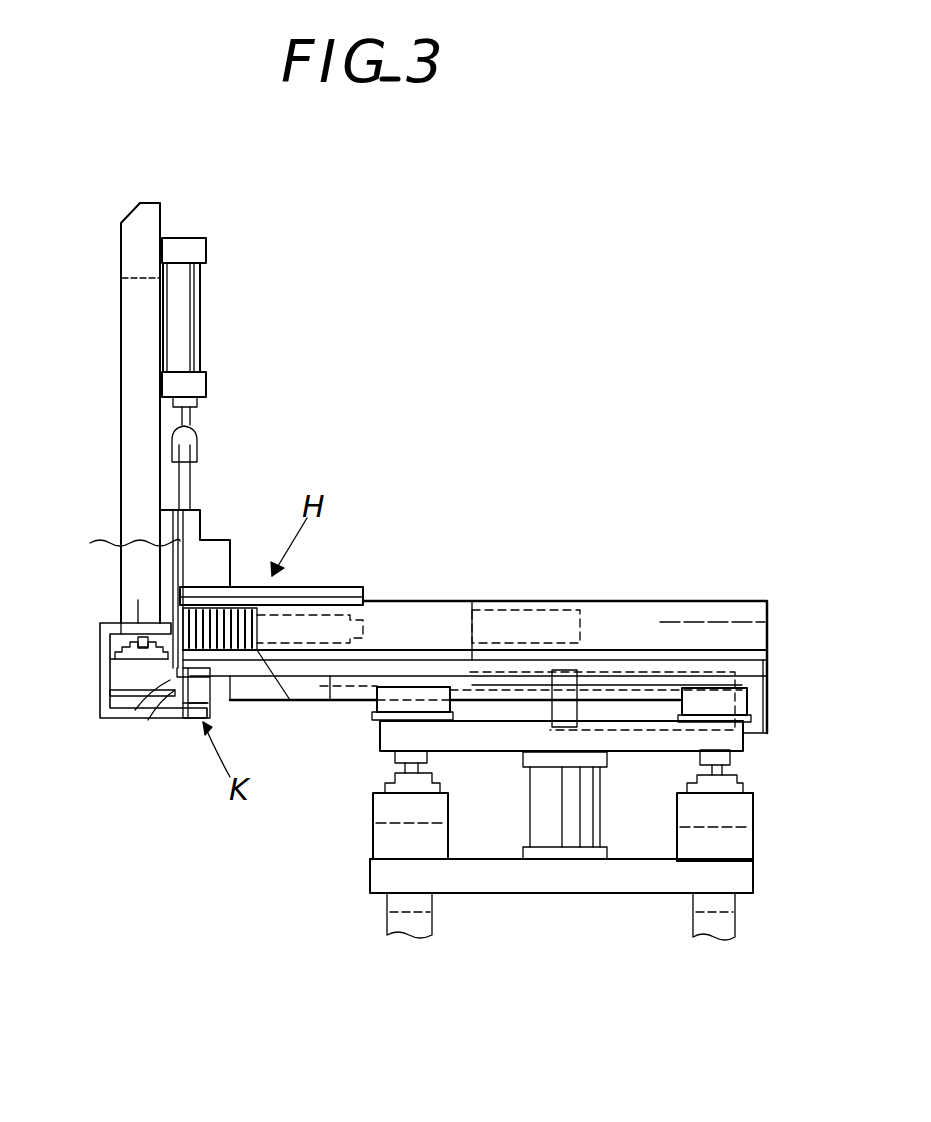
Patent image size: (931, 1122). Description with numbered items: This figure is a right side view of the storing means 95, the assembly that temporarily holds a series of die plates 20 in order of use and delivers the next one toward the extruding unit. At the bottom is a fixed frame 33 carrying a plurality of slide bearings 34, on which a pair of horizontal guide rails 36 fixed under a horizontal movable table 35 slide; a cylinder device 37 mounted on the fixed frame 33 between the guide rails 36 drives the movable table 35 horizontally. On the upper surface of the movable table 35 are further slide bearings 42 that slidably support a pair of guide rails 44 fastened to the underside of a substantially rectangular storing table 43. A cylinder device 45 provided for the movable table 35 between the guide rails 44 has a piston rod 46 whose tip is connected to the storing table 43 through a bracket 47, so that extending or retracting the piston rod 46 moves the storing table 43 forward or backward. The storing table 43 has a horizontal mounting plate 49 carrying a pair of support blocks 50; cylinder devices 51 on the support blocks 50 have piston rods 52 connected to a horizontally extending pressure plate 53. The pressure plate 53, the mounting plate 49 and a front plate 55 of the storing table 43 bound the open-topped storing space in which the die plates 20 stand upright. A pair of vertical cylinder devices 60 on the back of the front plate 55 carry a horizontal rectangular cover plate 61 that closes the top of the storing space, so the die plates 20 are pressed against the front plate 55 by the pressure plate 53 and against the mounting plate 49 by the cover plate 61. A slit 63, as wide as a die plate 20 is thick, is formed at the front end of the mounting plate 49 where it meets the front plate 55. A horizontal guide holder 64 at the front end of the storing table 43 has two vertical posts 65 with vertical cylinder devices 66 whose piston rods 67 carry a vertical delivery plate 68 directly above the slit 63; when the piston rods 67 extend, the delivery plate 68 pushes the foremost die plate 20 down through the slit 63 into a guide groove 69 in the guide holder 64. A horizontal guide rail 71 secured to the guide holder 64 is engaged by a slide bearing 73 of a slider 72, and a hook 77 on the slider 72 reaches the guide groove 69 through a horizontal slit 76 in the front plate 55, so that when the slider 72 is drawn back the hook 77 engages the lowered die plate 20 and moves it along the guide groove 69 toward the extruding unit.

The die plate 20 is at (230, 600).
The fixed frame 33 is at (417, 923).
The slide bearings 34 is at (385, 788).
The movable table 35 is at (737, 743).
The guide rails 36 is at (393, 757).
The cylinder device 37 is at (545, 808).
The slide bearings 42 is at (750, 700).
The storing table 43 is at (770, 612).
The guide rails 44 is at (253, 693).
The cylinder device 45 is at (643, 713).
The piston rod 46 is at (483, 705).
The bracket 47 is at (353, 670).
The mounting plate 49 is at (620, 660).
The support blocks 50 is at (483, 600).
The cylinder devices 51 is at (555, 610).
The piston rods 52 is at (337, 600).
The pressure plate 53 is at (262, 650).
The front plate 55 is at (178, 538).
The cylinder devices 60 is at (213, 548).
The cover plate 61 is at (300, 593).
The slit 63 is at (207, 683).
The guide holder 64 is at (117, 708).
The posts 65 is at (125, 321).
The cylinder devices 66 is at (190, 322).
The piston rods 67 is at (192, 414).
The delivery plate 68 is at (186, 476).
The guide groove 69 is at (177, 720).
The guide rail 71 is at (143, 637).
The slider 72 is at (117, 670).
The slide bearing 73 is at (113, 643).
The slit 76 is at (167, 677).
The hook 77 is at (130, 705).
The storing means 95 is at (504, 578).